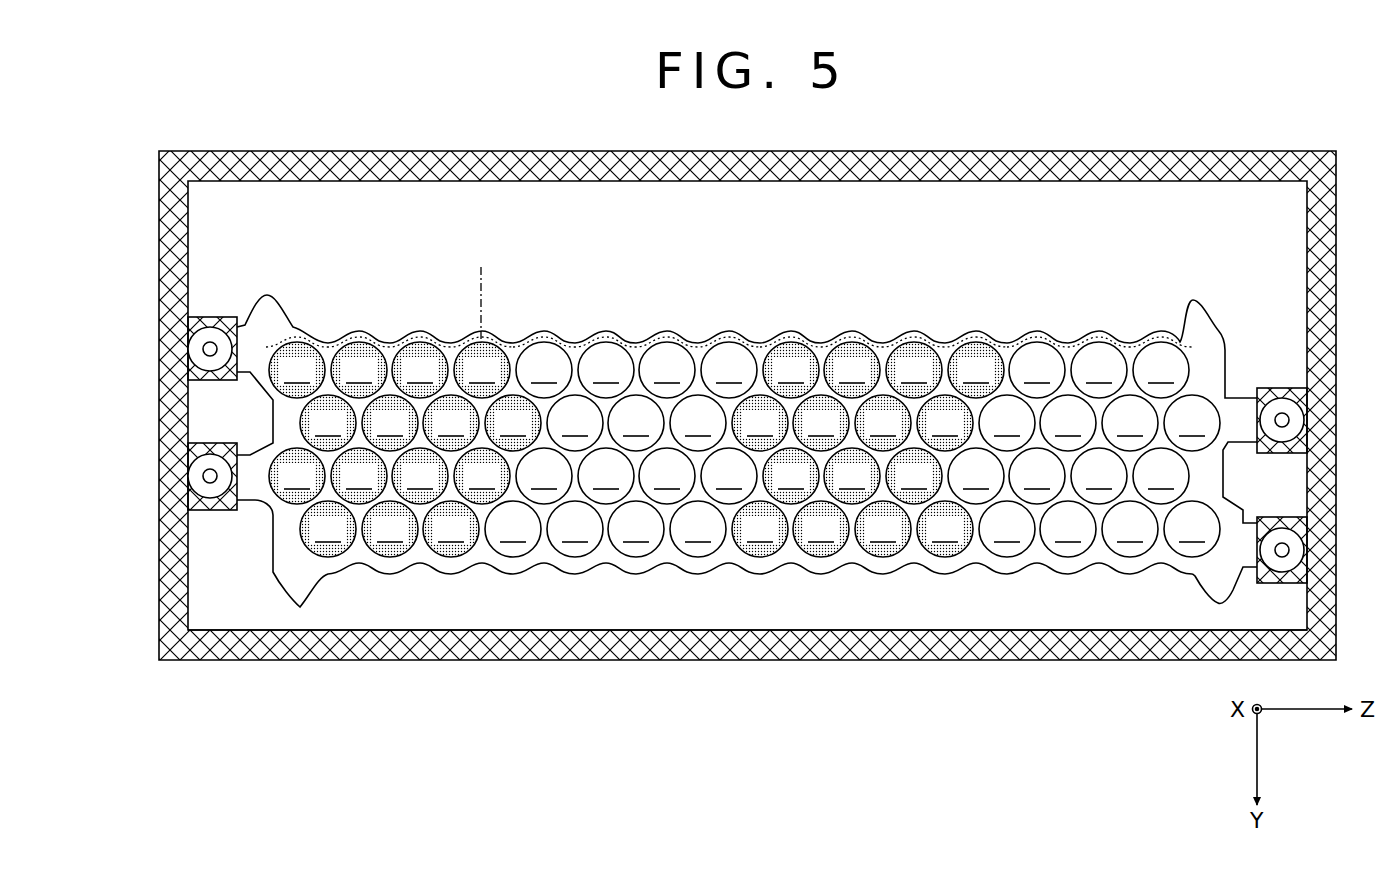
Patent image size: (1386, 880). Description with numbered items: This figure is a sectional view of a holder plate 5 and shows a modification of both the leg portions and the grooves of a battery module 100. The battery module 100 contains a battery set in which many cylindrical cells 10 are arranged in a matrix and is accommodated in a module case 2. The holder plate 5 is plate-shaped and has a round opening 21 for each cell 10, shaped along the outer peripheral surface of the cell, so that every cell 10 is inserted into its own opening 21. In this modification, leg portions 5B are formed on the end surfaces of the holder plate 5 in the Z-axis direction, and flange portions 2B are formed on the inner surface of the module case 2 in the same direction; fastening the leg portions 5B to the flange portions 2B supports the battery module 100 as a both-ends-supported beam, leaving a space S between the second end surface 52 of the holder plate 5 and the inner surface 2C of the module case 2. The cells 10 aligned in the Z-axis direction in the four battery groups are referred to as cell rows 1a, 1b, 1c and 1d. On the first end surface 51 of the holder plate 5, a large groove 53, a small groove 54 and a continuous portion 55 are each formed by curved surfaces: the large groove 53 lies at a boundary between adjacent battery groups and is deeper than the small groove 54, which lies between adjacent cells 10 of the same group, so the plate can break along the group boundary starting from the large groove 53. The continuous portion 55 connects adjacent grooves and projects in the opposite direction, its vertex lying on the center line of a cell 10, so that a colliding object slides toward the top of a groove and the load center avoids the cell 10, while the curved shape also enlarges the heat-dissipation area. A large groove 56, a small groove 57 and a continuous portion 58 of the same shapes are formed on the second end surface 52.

The module case 2 is at (1240, 157).
The flange portion 2B is at (200, 320).
The inner surface 2C is at (695, 631).
The holder plate 5 is at (1164, 548).
The leg portion 5B is at (200, 352).
The cell 10 is at (744, 449).
The cell row 1a is at (263, 340).
The cell row 1b is at (546, 333).
The cell row 1c is at (833, 340).
The cell row 1d is at (1069, 343).
The opening 21 is at (305, 338).
The first end surface 51 is at (641, 331).
The second end surface 52 is at (602, 579).
The large groove 53 is at (512, 350).
The small groove 54 is at (447, 338).
The continuous portion 55 is at (483, 343).
The large groove 56 is at (482, 556).
The small groove 57 is at (420, 566).
The continuous portion 58 is at (507, 562).
The battery module 100 is at (736, 295).
The space S is at (736, 614).